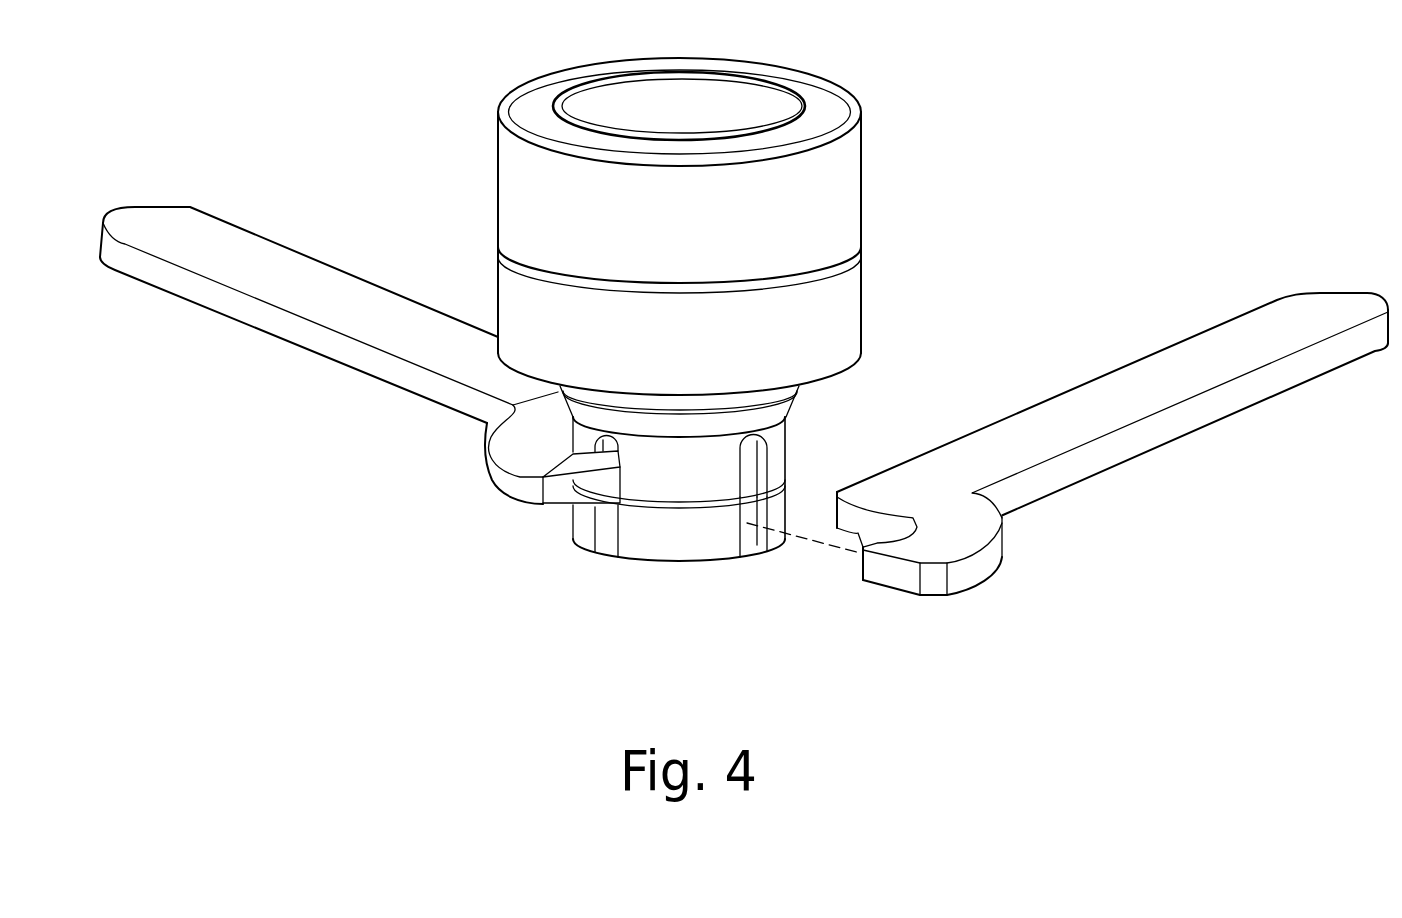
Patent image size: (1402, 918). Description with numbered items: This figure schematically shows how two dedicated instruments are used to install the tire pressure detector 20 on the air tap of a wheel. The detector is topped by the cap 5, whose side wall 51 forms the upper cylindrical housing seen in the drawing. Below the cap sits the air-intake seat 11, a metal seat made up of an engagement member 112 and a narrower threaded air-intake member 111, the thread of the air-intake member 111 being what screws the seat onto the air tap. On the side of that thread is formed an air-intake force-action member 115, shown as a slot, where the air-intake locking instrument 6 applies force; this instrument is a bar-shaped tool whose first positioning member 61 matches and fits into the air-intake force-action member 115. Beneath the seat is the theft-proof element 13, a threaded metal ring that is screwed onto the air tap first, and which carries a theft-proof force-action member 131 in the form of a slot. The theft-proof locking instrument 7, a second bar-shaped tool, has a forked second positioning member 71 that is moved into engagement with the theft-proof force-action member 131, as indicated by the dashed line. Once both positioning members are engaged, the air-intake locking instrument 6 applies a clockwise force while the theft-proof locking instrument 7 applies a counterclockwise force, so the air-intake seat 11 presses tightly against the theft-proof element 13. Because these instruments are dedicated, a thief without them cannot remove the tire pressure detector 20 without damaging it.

The cap 5 is at (500, 95).
The cap side wall 51 is at (516, 172).
The tire pressure detector 20 is at (895, 153).
The air-intake seat 11 is at (862, 280).
The engagement member 112 is at (848, 303).
The air-intake member 111 is at (773, 438).
The air-intake force-action member 115 is at (575, 458).
The air-intake locking instrument 6 is at (367, 315).
The first positioning member 61 is at (588, 550).
The theft-proof element 13 is at (670, 566).
The theft-proof force-action member 131 is at (745, 550).
The theft-proof locking instrument 7 is at (1147, 378).
The second positioning member 71 is at (883, 567).